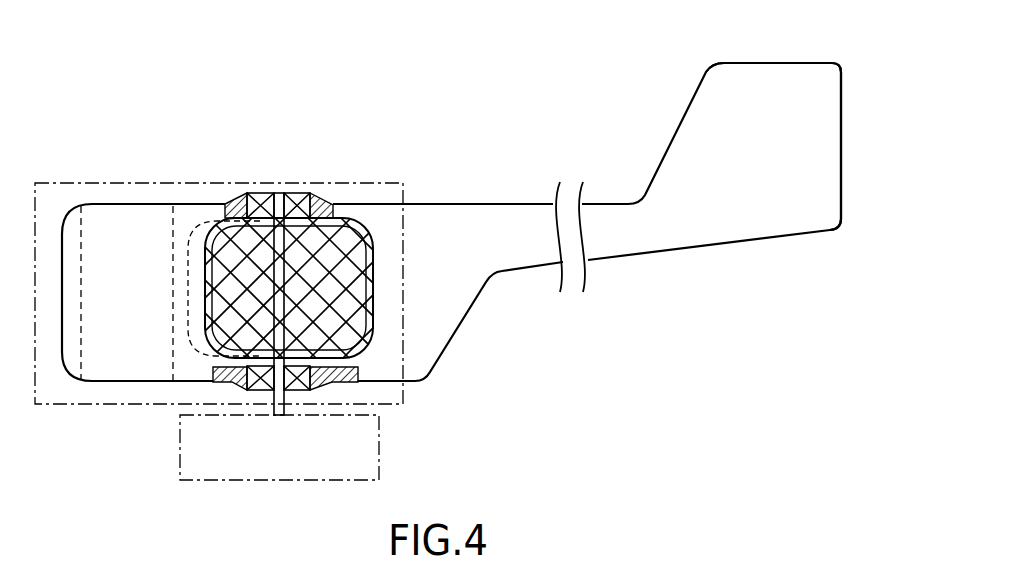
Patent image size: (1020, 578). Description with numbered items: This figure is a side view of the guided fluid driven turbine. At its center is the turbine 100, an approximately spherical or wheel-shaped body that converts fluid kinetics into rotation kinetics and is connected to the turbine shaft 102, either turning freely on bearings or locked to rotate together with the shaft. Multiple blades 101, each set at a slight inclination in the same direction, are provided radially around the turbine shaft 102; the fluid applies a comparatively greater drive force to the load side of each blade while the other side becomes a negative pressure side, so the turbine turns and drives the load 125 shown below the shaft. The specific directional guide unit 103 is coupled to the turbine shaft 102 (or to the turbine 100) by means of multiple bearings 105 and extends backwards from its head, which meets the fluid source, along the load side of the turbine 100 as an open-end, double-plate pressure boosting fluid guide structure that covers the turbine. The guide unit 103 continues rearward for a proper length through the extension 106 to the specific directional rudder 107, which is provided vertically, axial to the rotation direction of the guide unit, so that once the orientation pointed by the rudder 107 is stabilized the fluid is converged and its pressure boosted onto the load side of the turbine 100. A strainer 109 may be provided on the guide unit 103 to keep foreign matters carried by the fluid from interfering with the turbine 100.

The turbine 100 is at (252, 200).
The blades 101 is at (210, 386).
The turbine shaft 102 is at (279, 203).
The specific directional guide unit 103 is at (107, 183).
The bearings 105 is at (303, 207).
The extension 106 is at (494, 227).
The specific directional rudder 107 is at (743, 91).
The strainer 109 is at (342, 205).
The load 125 is at (380, 455).